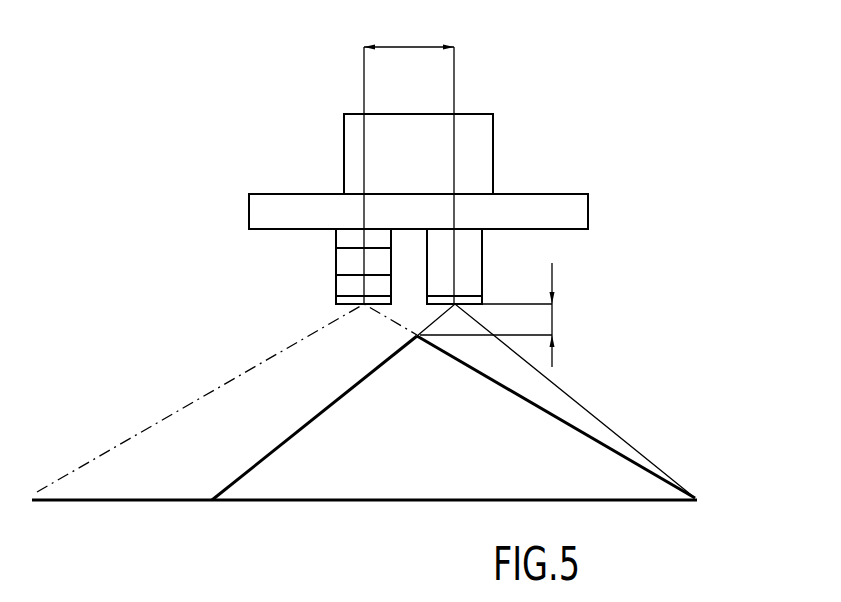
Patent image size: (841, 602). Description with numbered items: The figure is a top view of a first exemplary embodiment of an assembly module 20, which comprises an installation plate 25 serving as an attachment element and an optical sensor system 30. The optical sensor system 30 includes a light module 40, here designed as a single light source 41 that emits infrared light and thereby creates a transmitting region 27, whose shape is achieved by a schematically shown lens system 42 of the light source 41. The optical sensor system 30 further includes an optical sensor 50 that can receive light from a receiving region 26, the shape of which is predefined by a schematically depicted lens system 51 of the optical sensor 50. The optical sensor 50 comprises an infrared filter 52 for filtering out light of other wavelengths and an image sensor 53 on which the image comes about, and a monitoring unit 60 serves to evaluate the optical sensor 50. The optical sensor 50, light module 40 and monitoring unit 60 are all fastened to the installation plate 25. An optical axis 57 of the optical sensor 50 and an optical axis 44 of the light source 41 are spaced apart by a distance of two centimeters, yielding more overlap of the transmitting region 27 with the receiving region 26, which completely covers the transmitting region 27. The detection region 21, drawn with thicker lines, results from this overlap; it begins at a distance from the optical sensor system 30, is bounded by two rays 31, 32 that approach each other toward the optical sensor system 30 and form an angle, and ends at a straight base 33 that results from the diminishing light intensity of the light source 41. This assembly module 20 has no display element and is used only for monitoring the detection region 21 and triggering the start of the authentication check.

The assembly module 20 is at (572, 77).
The detection region 21 is at (312, 463).
The installation plate 25 is at (515, 213).
The receiving region 26 is at (133, 468).
The transmitting region 27 is at (543, 398).
The optical sensor system 30 is at (107, 67).
The ray 31 is at (277, 447).
The ray 32 is at (505, 388).
The base 33 is at (353, 502).
The light module 40 is at (320, 223).
The light source 41 is at (321, 216).
The lens system 42 is at (321, 216).
The optical axis 44 is at (455, 88).
The optical sensor 50 is at (160, 260).
The lens system 51 is at (278, 286).
The infrared filter 52 is at (336, 300).
The image sensor 53 is at (278, 261).
The optical axis 57 is at (364, 73).
The monitoring unit 60 is at (347, 127).